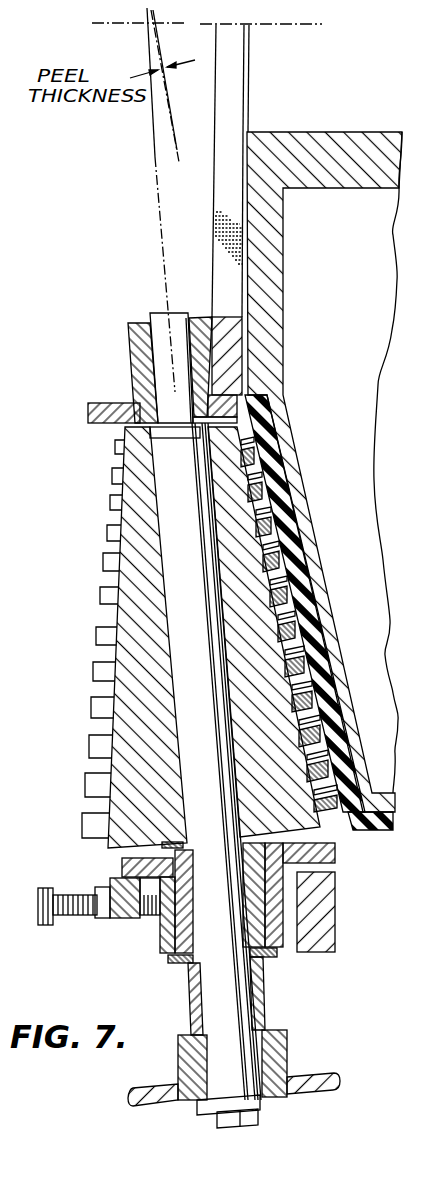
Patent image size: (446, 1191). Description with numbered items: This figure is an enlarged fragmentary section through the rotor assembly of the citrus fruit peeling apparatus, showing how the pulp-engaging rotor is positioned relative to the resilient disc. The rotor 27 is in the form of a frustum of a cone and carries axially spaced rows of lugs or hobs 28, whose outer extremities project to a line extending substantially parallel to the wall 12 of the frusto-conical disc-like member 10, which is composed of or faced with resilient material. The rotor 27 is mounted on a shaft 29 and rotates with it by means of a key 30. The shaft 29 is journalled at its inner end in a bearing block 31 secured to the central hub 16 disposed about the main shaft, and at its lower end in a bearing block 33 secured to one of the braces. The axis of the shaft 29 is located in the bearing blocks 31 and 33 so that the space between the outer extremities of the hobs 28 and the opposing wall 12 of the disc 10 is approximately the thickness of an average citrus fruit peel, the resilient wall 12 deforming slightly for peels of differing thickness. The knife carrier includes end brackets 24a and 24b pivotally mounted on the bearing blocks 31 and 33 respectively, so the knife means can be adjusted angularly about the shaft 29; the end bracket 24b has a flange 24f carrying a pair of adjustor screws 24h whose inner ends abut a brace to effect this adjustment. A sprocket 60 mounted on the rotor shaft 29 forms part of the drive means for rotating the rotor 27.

The frusto-conical disc-like member 10 is at (366, 835).
The wall of disc 12 is at (313, 710).
The central hub 16 is at (232, 347).
The end bracket 24a is at (103, 416).
The end bracket 24b is at (123, 868).
The flange 24f is at (125, 912).
The adjustor screws 24h is at (44, 918).
The rotor 27 is at (82, 784).
The hobs 28 is at (113, 500).
The shaft 29 is at (263, 997).
The key 30 is at (232, 704).
The bearing block 31 is at (140, 347).
The bearing block 33 is at (167, 943).
The sprocket 60 is at (317, 1077).